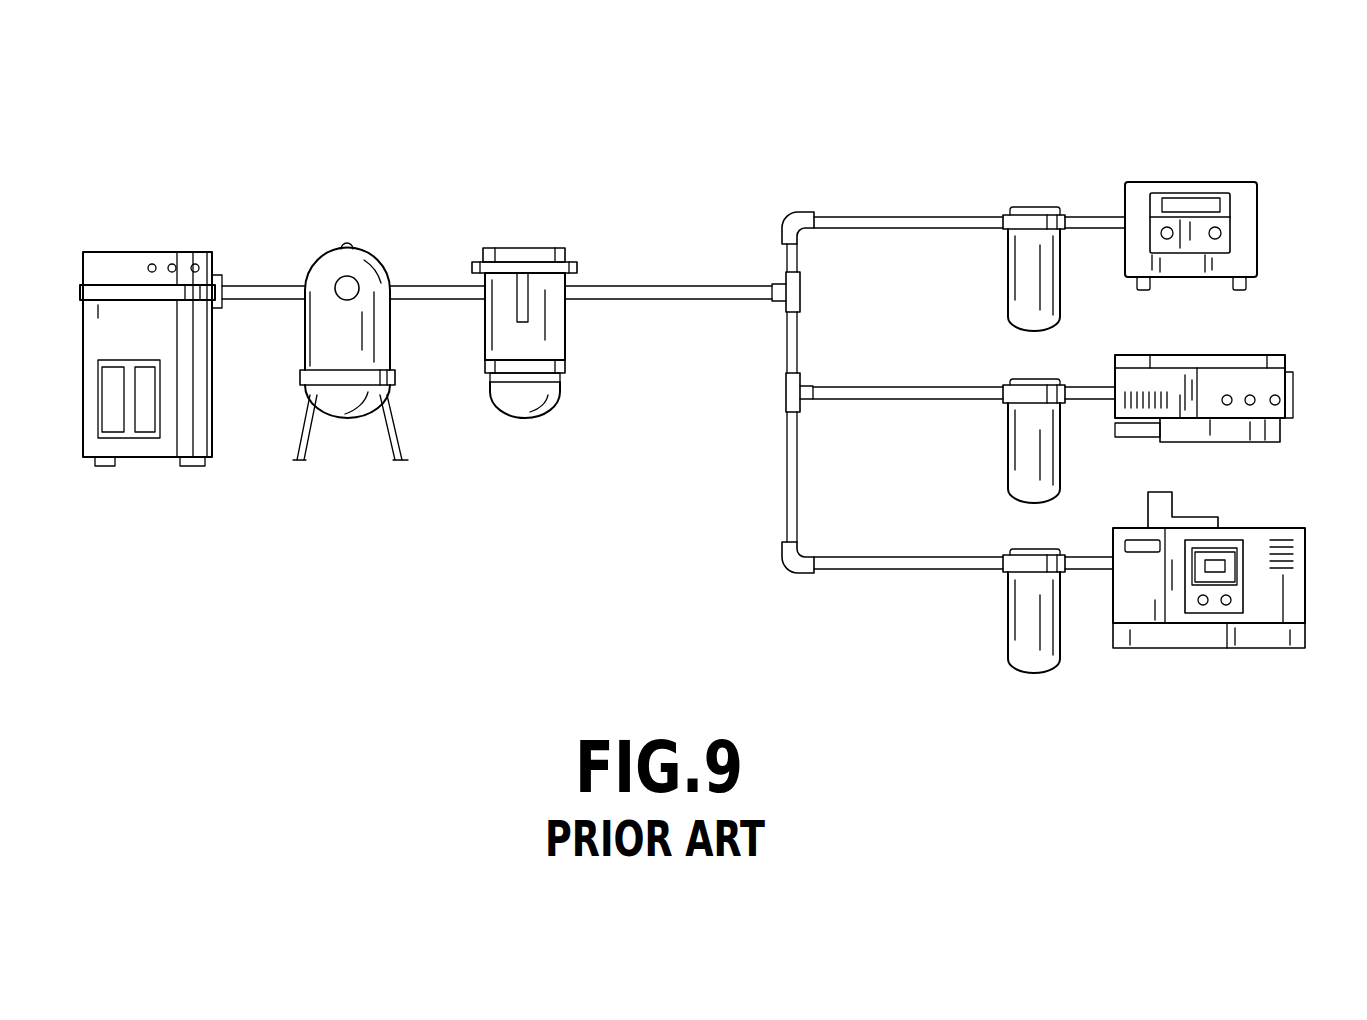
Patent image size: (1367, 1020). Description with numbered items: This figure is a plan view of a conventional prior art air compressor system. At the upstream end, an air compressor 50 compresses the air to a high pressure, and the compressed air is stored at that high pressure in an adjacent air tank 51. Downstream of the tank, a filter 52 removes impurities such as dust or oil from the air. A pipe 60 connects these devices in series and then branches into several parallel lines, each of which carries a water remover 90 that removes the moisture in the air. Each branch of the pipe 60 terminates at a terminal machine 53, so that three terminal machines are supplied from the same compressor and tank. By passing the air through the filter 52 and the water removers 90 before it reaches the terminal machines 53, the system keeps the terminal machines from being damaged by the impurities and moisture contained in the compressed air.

The air compressor 50 is at (195, 257).
The air tank 51 is at (365, 265).
The filter 52 is at (550, 258).
The pipe 60 is at (695, 288).
The water remover 90 is at (997, 270).
The terminal machine 53 is at (1252, 205).